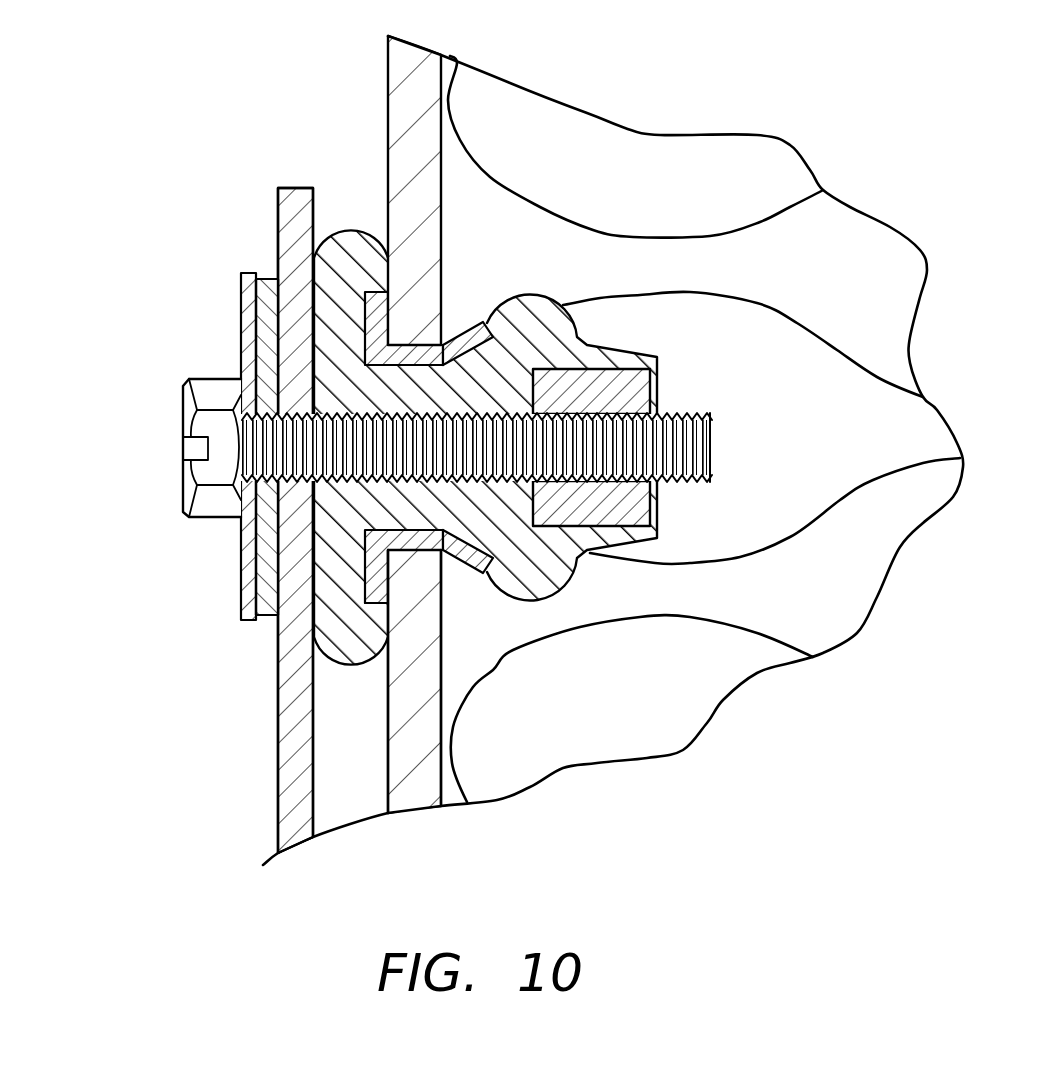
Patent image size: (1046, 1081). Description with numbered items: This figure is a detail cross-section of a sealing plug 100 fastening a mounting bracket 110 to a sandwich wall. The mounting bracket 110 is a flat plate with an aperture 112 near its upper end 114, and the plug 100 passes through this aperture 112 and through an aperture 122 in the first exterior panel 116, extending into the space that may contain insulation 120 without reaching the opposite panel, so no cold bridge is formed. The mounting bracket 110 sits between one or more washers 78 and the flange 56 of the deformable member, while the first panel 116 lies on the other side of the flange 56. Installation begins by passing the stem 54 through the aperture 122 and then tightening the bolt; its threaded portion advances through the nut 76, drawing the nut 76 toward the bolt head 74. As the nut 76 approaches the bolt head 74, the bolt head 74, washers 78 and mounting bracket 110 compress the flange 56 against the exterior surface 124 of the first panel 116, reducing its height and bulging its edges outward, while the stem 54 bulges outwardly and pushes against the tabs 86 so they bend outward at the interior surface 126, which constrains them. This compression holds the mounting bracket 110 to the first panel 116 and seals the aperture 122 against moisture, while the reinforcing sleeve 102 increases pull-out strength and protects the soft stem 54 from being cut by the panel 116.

The sealing plug 100 is at (165, 379).
The bolt head 74 is at (190, 483).
The nut 76 is at (588, 383).
The washers 78 is at (267, 279).
The aperture 112 is at (267, 530).
The aperture 122 is at (370, 596).
The stem 54 is at (537, 563).
The flange 56 is at (347, 652).
The tabs 86 is at (470, 328).
The reinforcing sleeve 102 is at (403, 357).
The mounting bracket 110 is at (290, 708).
The upper end 114 is at (297, 188).
The first exterior panel 116 is at (404, 70).
The insulation 120 is at (767, 303).
The exterior surface 124 is at (388, 740).
The interior surface 126 is at (442, 745).